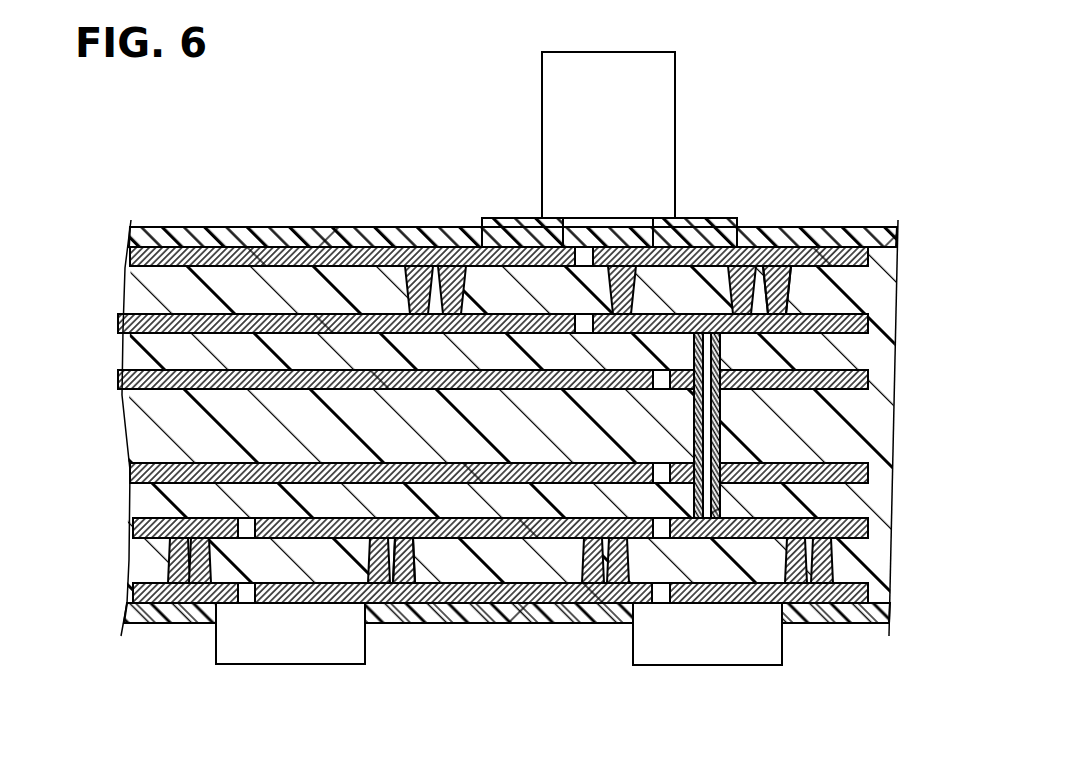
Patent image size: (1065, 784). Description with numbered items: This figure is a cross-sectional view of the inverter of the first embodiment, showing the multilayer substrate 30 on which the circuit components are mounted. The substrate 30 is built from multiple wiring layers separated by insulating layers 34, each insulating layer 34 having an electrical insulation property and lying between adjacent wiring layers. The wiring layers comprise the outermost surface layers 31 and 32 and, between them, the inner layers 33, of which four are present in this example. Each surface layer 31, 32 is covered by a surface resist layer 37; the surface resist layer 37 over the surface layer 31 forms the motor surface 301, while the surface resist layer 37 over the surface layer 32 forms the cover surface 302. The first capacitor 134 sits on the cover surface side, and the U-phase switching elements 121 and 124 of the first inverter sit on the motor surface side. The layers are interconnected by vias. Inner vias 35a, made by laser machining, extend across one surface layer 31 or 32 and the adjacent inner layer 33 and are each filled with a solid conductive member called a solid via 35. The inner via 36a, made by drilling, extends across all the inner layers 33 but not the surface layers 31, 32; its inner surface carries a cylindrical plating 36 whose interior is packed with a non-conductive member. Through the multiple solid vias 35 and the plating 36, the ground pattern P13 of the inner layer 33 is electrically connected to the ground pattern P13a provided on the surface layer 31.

The substrate 30 is at (173, 214).
The cover surface 302 is at (343, 227).
The motor surface 301 is at (500, 623).
The surface layer 31 is at (135, 592).
The surface layer 32 is at (135, 256).
The inner layer 33 is at (135, 322).
The insulating layer 34 is at (145, 285).
The solid via 35 is at (420, 280).
The inner via 35a is at (785, 295).
The plating 36 is at (720, 345).
The inner via 36a is at (718, 420).
The surface resist layer 37 is at (135, 237).
The first capacitor 134 is at (542, 98).
The switching element 124 is at (255, 664).
The switching element 121 is at (720, 665).
The ground pattern P13 is at (352, 570).
The ground pattern P13a is at (327, 588).